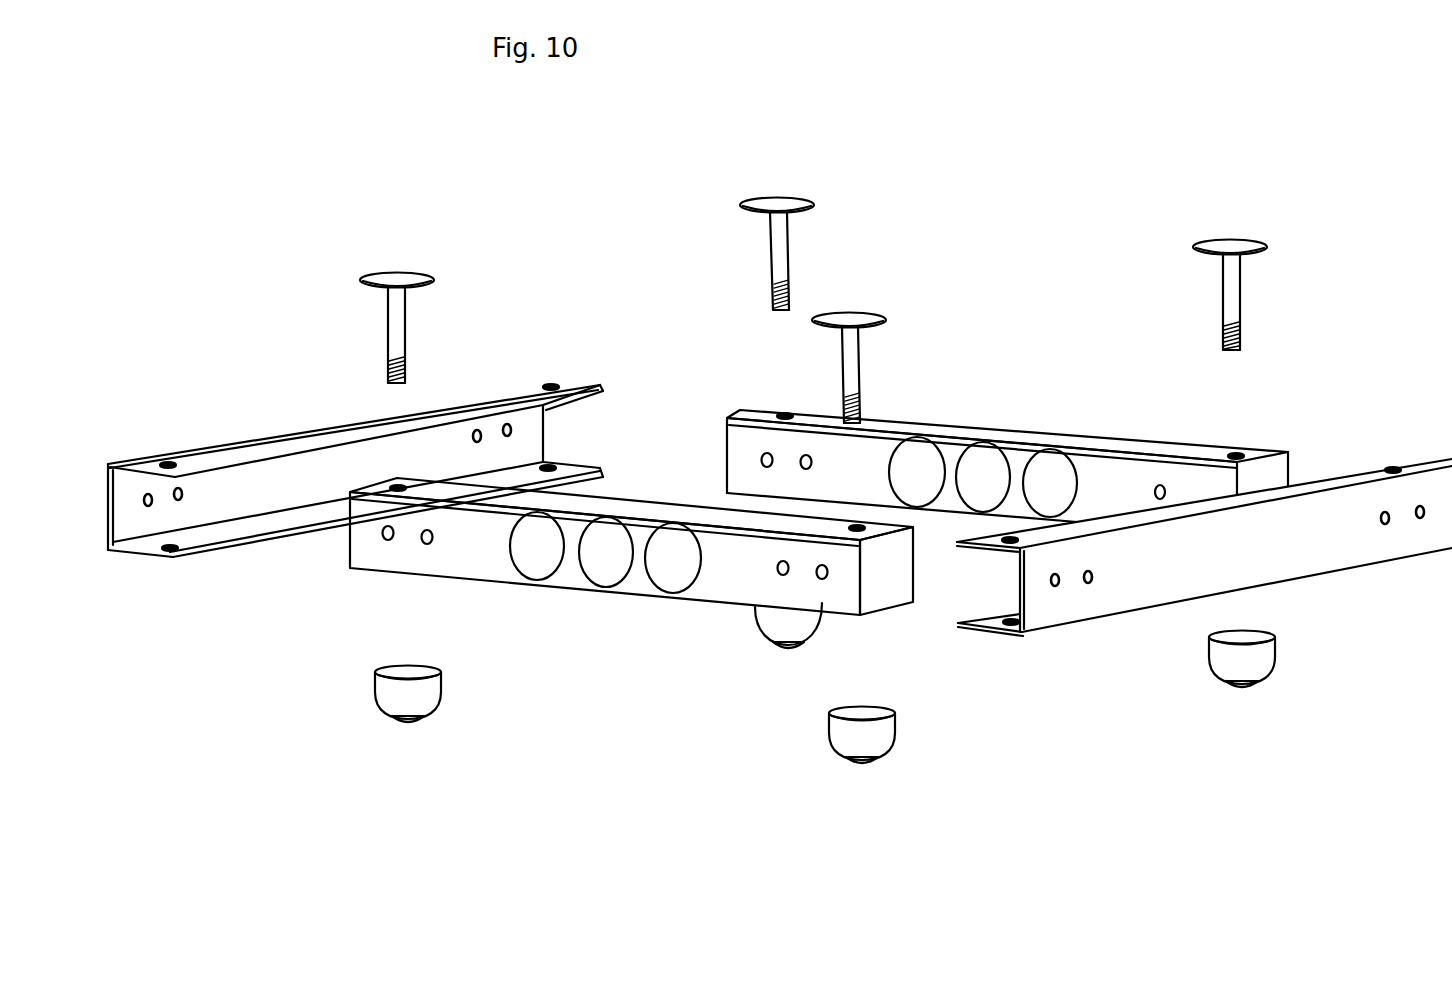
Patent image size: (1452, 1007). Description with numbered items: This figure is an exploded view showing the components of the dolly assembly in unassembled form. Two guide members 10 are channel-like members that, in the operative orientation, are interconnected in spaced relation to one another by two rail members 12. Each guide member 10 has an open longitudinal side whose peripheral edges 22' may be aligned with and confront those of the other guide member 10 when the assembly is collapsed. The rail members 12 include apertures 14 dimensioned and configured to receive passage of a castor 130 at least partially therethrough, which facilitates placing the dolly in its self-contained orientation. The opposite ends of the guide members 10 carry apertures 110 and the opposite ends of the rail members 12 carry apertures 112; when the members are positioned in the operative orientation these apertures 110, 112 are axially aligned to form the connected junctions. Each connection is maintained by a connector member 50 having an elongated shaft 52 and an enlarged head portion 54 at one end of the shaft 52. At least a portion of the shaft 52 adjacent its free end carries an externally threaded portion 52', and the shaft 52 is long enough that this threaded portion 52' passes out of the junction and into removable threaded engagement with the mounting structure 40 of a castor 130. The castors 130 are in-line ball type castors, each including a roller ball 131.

The guide member 10 is at (780, 513).
The rail member 12 is at (819, 514).
The aperture 14 is at (587, 571).
The peripheral edge 22' is at (784, 477).
The castor mounting structure 40 is at (810, 708).
The connector member 50 is at (802, 281).
The shaft 52 is at (839, 317).
The externally threaded portion 52' is at (814, 350).
The head portion 54 is at (397, 273).
The guide member aperture 110 is at (168, 465).
The rail member aperture 112 is at (398, 488).
The castor 130 is at (380, 695).
The roller ball 131 is at (410, 722).